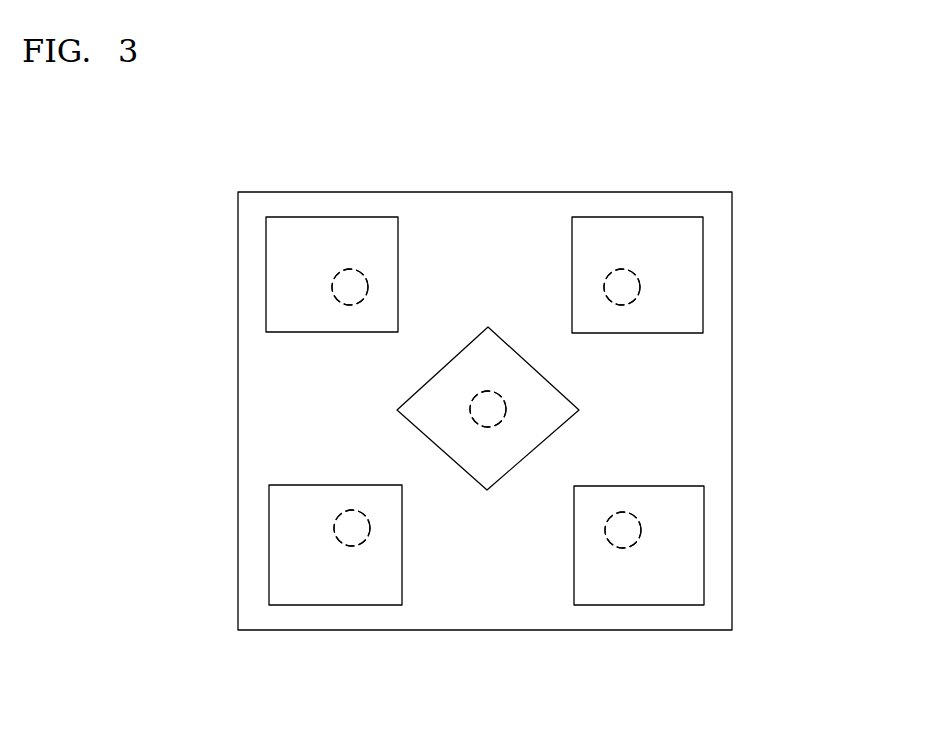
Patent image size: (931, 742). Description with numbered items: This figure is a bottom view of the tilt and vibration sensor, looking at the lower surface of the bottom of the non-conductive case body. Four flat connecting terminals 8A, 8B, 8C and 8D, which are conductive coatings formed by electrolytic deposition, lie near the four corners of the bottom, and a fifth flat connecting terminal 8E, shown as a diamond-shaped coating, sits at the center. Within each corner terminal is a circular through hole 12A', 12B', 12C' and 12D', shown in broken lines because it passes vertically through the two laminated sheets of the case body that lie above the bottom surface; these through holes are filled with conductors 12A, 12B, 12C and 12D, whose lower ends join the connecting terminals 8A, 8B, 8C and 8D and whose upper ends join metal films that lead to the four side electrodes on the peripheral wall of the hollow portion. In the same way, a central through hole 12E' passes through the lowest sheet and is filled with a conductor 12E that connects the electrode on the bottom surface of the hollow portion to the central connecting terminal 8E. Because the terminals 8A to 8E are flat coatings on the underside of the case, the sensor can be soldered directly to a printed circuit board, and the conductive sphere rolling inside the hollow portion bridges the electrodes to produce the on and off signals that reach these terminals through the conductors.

The flat connecting terminal 8A is at (377, 243).
The flat connecting terminal 8B is at (298, 505).
The flat connecting terminal 8C is at (677, 518).
The flat connecting terminal 8D is at (633, 245).
The flat connecting terminal 8E is at (538, 409).
The conductor 12A is at (323, 196).
The through hole 12A' is at (250, 285).
The conductor 12B is at (260, 546).
The through hole 12B' is at (354, 616).
The conductor 12C is at (719, 562).
The through hole 12C' is at (655, 620).
The conductor 12D is at (717, 223).
The through hole 12D' is at (737, 300).
The conductor 12E is at (329, 400).
The through hole 12E' is at (502, 543).